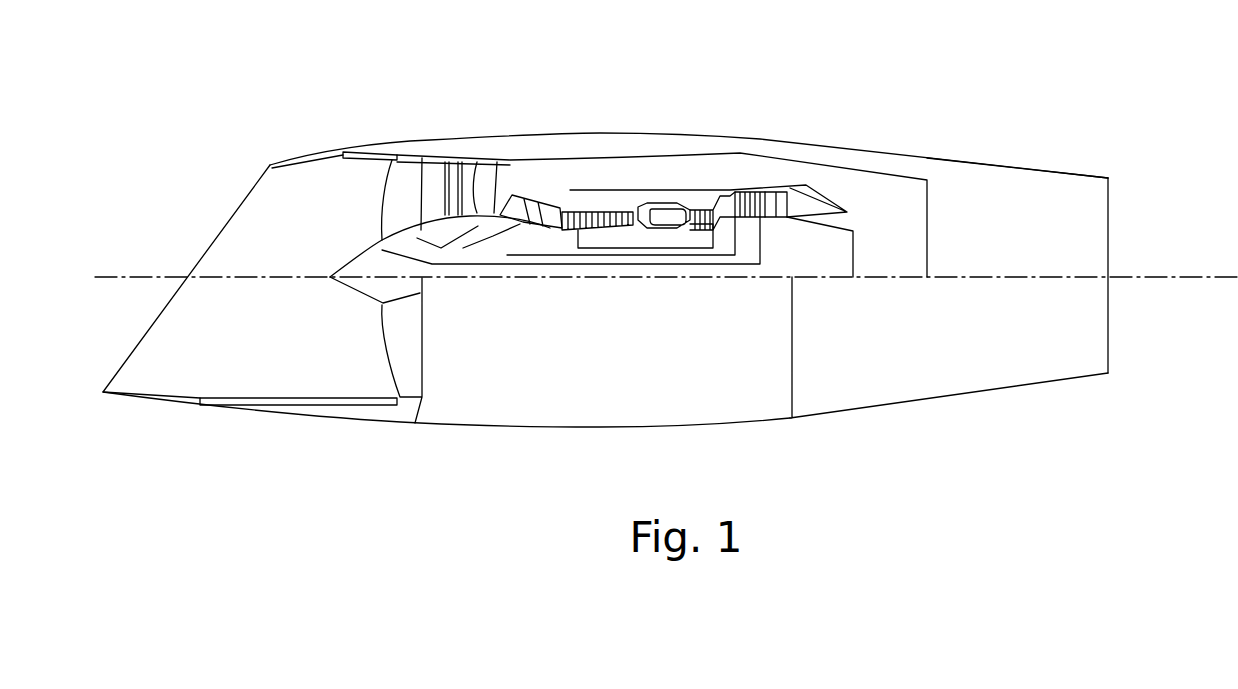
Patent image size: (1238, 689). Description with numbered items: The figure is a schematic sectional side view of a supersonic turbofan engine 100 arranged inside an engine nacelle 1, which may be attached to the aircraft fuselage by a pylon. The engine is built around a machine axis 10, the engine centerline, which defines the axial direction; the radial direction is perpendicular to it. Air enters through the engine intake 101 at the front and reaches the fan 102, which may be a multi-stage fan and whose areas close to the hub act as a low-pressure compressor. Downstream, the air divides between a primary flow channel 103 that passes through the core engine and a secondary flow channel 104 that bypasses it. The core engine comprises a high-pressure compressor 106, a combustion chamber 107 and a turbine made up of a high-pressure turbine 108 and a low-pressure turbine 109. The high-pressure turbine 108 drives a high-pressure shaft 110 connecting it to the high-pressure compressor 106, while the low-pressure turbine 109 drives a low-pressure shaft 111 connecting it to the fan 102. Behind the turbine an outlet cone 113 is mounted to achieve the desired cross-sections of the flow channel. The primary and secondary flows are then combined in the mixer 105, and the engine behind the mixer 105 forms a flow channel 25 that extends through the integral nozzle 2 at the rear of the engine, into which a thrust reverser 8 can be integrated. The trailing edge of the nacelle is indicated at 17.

The turbofan engine 100 is at (525, 111).
The engine nacelle 1 is at (533, 427).
The nozzle 2 is at (1030, 166).
The thrust reverser 8 is at (868, 411).
The machine axis 10 is at (217, 280).
The nozzle trailing edge 17 is at (1110, 202).
The flow channel 25 is at (908, 195).
The engine intake 101 is at (307, 163).
The fan 102 is at (435, 157).
The primary flow channel 103 is at (568, 264).
The secondary flow channel 104 is at (603, 175).
The mixer 105 is at (845, 215).
The high-pressure compressor 106 is at (610, 264).
The combustion chamber 107 is at (661, 199).
The high-pressure turbine 108 is at (722, 230).
The low-pressure turbine 109 is at (745, 228).
The high-pressure shaft 110 is at (660, 248).
The low-pressure shaft 111 is at (510, 264).
The outlet cone 113 is at (850, 215).